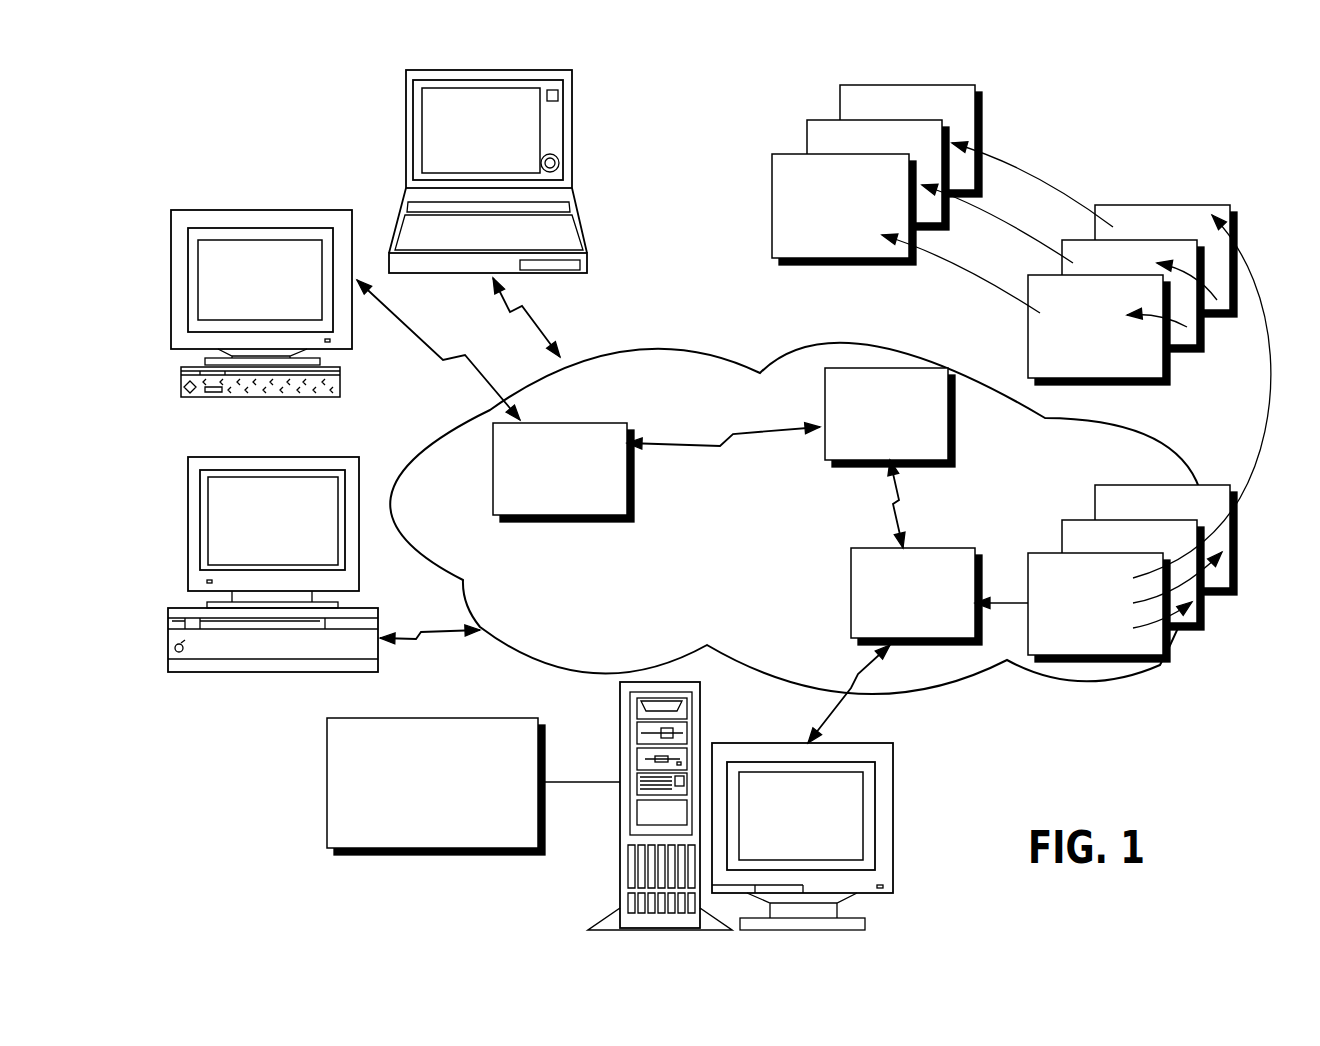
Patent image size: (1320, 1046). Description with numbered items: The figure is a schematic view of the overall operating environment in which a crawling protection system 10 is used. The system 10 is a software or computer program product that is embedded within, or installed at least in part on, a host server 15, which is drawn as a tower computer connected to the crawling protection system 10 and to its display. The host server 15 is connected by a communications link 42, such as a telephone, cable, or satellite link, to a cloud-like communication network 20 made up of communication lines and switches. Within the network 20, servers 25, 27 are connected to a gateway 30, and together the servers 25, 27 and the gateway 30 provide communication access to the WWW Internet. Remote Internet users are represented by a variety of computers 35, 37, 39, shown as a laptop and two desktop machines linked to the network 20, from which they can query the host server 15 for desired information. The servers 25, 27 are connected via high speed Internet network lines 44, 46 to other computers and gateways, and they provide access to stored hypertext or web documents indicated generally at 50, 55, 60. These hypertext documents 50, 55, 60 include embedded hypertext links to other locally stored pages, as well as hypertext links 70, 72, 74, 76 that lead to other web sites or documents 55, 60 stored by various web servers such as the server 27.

The crawling protection system 10 is at (327, 760).
The host server 15 is at (620, 727).
The communication network 20 is at (682, 347).
The server 25 is at (866, 548).
The server 27 is at (952, 420).
The gateway 30 is at (596, 523).
The computer 35 is at (582, 225).
The computer 37 is at (322, 210).
The computer 39 is at (322, 457).
The communication link 42 is at (823, 720).
The high speed Internet network line 44 is at (898, 492).
The high speed Internet network line 46 is at (716, 433).
The hypertext documents 50 is at (1248, 562).
The hypertext documents 55 is at (1240, 233).
The hypertext documents 60 is at (790, 140).
The hypertext link 70 is at (1265, 403).
The hypertext link 72 is at (1052, 188).
The hypertext link 74 is at (1013, 228).
The hypertext link 76 is at (967, 270).